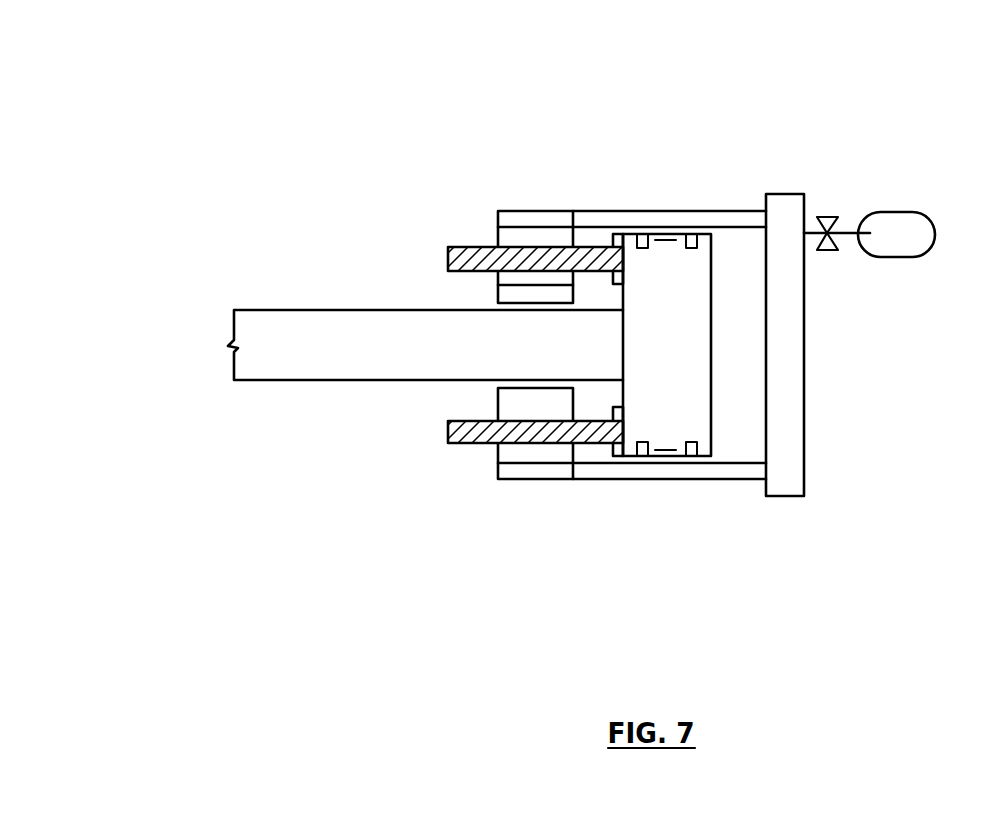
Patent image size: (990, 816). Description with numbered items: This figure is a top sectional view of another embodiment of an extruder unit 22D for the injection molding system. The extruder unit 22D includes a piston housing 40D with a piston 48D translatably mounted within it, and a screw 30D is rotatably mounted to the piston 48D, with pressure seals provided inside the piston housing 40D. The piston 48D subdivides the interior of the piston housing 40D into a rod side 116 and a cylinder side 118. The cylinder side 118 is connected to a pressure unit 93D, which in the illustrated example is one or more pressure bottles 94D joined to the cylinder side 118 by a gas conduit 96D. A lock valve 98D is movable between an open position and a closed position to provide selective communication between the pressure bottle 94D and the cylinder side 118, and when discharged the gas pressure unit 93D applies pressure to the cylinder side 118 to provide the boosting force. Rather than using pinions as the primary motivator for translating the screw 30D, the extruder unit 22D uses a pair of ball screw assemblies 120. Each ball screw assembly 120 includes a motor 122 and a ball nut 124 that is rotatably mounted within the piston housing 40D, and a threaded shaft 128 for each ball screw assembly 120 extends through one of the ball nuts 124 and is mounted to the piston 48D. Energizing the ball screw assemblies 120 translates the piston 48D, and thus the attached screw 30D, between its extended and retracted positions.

The extruder unit 22D is at (316, 591).
The screw 30D is at (325, 380).
The piston housing 40D is at (598, 384).
The piston 48D is at (667, 237).
The pressure unit 93D is at (854, 185).
The pressure bottle 94D is at (913, 212).
The gas conduit 96D is at (810, 237).
The lock valve 98D is at (828, 212).
The rod side 116 is at (605, 455).
The cylinder side 118 is at (733, 447).
The ball screw assembly 120 is at (455, 593).
The motor 122 is at (559, 468).
The ball nut 124 is at (528, 450).
The threaded shaft 128 is at (477, 445).